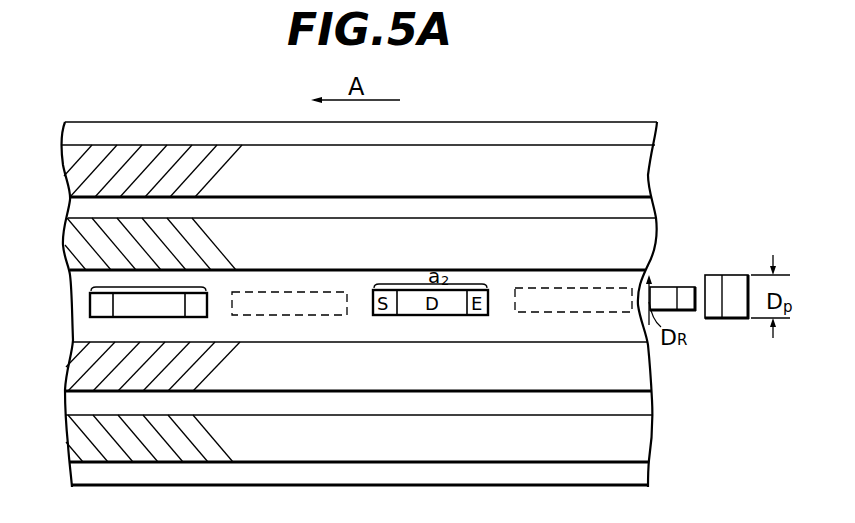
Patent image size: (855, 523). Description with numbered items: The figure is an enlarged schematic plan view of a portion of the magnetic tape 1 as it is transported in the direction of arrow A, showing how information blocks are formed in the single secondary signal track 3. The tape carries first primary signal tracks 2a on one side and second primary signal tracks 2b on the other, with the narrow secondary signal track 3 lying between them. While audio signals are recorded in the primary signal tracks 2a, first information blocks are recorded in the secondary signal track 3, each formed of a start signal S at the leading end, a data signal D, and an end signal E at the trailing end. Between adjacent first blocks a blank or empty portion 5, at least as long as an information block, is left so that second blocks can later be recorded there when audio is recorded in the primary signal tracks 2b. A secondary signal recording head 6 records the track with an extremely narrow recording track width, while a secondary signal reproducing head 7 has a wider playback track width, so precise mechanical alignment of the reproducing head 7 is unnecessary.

The magnetic tape 1 is at (163, 119).
The first primary signal tracks 2a is at (57, 147).
The second primary signal tracks 2b is at (57, 343).
The secondary signal track 3 is at (86, 305).
The blank or empty portion 5 is at (297, 290).
The secondary signal recording head 6 is at (671, 280).
The secondary signal reproducing head 7 is at (729, 268).